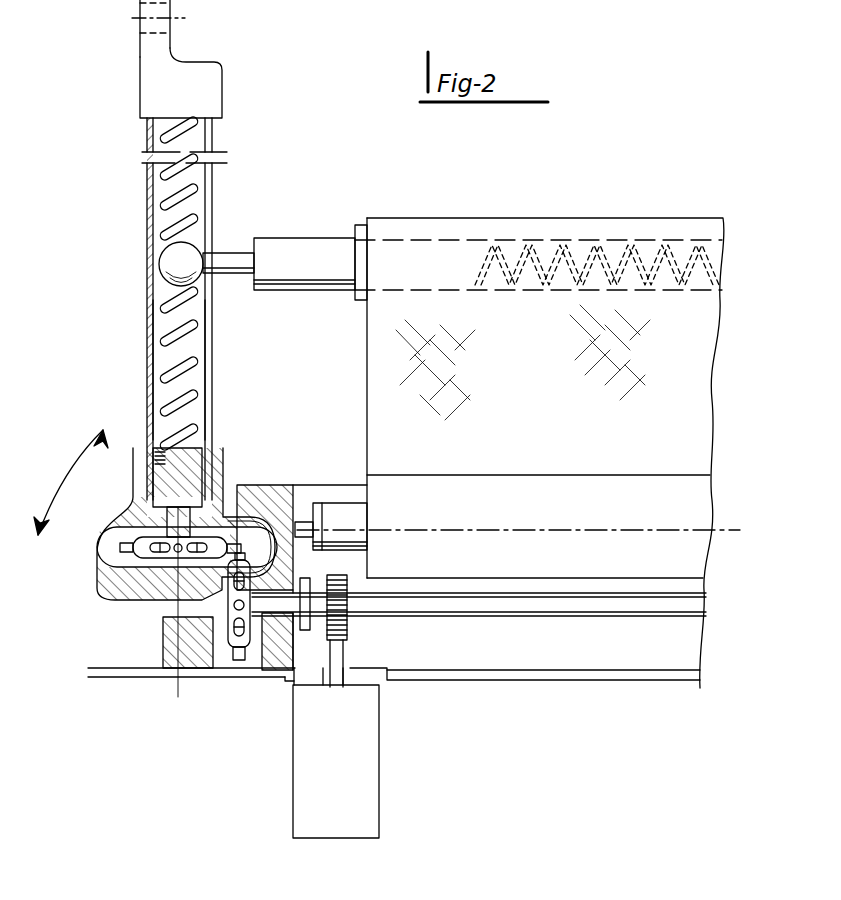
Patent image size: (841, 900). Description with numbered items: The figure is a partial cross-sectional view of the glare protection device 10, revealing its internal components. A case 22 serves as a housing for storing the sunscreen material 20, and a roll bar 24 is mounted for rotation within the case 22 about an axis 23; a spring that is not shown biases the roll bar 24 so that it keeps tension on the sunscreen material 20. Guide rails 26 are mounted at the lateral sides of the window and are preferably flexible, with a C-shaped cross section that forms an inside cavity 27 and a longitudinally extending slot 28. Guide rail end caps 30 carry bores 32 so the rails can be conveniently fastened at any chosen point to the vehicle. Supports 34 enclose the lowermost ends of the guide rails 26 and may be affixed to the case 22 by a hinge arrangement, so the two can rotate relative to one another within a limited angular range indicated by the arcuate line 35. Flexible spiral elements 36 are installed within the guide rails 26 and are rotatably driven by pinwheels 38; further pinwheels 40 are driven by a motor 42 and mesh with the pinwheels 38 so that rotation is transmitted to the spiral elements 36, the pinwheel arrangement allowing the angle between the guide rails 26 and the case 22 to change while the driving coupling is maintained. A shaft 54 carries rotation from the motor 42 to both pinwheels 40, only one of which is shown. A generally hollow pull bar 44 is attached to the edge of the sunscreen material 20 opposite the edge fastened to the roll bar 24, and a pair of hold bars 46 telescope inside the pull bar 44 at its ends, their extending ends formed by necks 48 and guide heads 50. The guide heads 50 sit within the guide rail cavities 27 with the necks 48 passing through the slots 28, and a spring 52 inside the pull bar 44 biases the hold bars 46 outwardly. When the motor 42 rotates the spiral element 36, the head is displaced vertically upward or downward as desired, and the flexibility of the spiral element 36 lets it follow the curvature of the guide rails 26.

The glare protection device 10 is at (318, 172).
The sunscreen material 20 is at (702, 382).
The case 22 is at (256, 495).
The axis 23 is at (710, 533).
The roll bar 24 is at (332, 512).
The guide rails 26 is at (146, 199).
The inside cavity 27 is at (192, 352).
The longitudinally extending slot 28 is at (210, 385).
The guide rail end caps 30 is at (220, 90).
The bores 32 is at (137, 20).
The supports 34 is at (100, 572).
The arcuate line 35 is at (62, 480).
The flexible spiral elements 36 is at (165, 347).
The pinwheels 38 is at (170, 552).
The pinwheels 40 is at (237, 655).
The motor 42 is at (362, 789).
The pull bar 44 is at (471, 226).
The hold bars 46 is at (304, 257).
The necks 48 is at (232, 262).
The guide heads 50 is at (162, 262).
The spring 52 is at (597, 244).
The shaft 54 is at (704, 612).